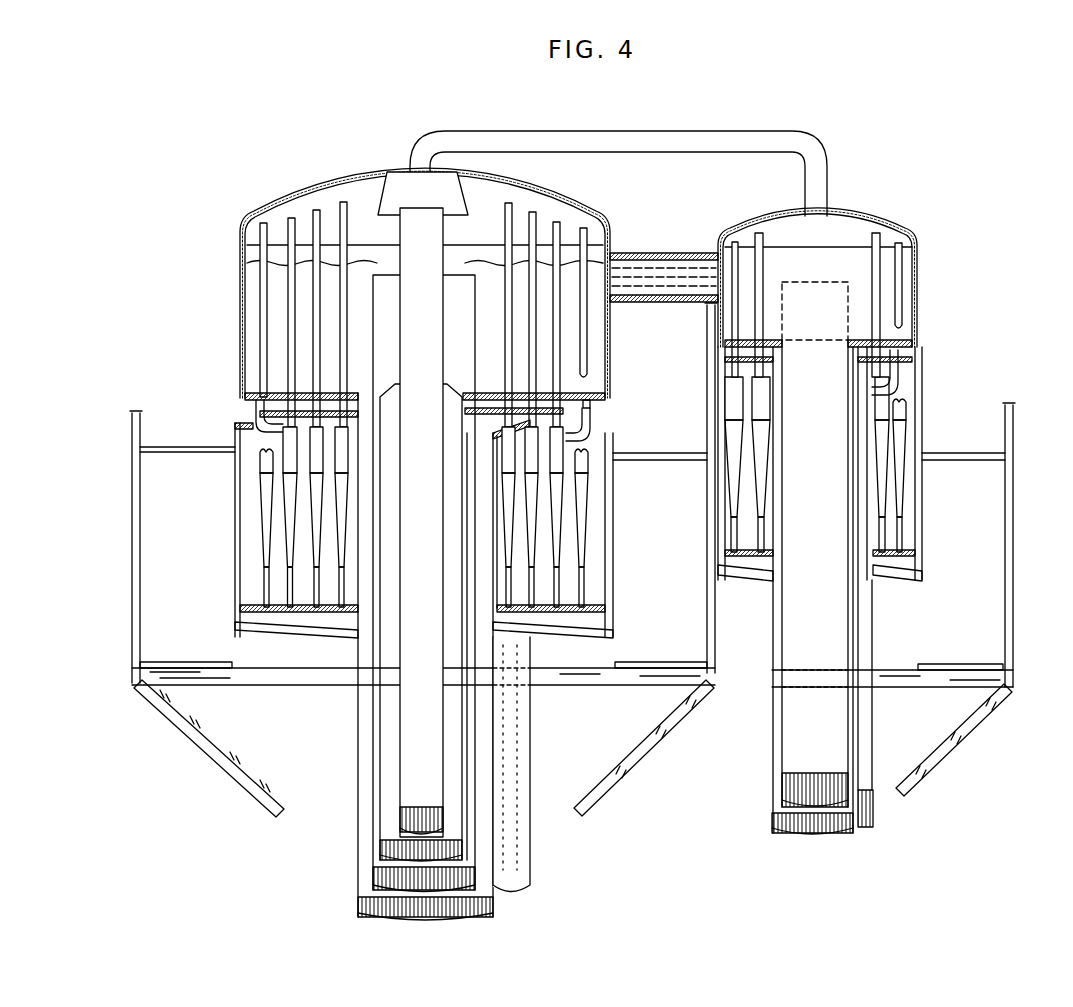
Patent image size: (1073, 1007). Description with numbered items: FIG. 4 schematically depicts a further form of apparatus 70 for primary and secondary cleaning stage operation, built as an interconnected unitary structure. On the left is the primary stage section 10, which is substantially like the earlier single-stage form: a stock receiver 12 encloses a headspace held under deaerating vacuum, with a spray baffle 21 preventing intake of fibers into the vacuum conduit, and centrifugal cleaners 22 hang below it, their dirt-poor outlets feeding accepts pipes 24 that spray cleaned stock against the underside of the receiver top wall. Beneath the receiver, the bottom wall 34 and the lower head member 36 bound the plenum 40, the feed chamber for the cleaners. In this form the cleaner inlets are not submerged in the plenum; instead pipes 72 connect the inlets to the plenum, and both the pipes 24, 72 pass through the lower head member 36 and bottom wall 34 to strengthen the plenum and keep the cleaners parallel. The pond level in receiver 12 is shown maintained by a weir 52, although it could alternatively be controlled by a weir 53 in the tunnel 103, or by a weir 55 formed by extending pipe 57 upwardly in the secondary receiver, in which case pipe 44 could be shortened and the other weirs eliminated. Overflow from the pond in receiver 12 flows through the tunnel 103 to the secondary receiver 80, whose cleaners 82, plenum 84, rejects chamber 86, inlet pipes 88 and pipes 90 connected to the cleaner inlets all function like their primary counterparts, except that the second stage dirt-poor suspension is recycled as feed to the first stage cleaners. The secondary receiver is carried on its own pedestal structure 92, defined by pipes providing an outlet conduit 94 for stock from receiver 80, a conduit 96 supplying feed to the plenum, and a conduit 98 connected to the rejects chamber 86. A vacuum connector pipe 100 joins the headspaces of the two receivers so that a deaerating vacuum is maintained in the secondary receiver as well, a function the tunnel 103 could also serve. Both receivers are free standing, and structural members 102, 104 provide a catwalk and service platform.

The primary stage section 10 is at (383, 158).
The stock receiver 12 is at (300, 195).
The spray baffle 21 is at (463, 198).
The centrifugal cleaners 22 is at (277, 533).
The accepts pipes 24 is at (287, 327).
The bottom wall 34 is at (607, 355).
The lower head member 36 is at (605, 380).
The plenum 40 is at (285, 392).
The pipe 44 is at (478, 568).
The weir 52 is at (478, 298).
The weir 53 is at (618, 283).
The weir 55 is at (813, 282).
The pipe 57 is at (853, 337).
The apparatus 70 is at (732, 124).
The pipes 72 is at (265, 425).
The secondary receiver 80 is at (900, 235).
The cleaners 82 is at (905, 440).
The plenum 84 is at (887, 353).
The rejects chamber 86 is at (905, 560).
The inlet pipes 88 is at (900, 307).
The pipes 90 is at (913, 373).
The pedestal structure 92 is at (772, 775).
The outlet conduit 94 is at (820, 765).
The conduit 96 is at (875, 805).
The conduit 98 is at (865, 740).
The vacuum connector pipe 100 is at (540, 131).
The structural members 102 is at (142, 638).
The tunnel 103 is at (655, 255).
The structural members 104 is at (640, 460).